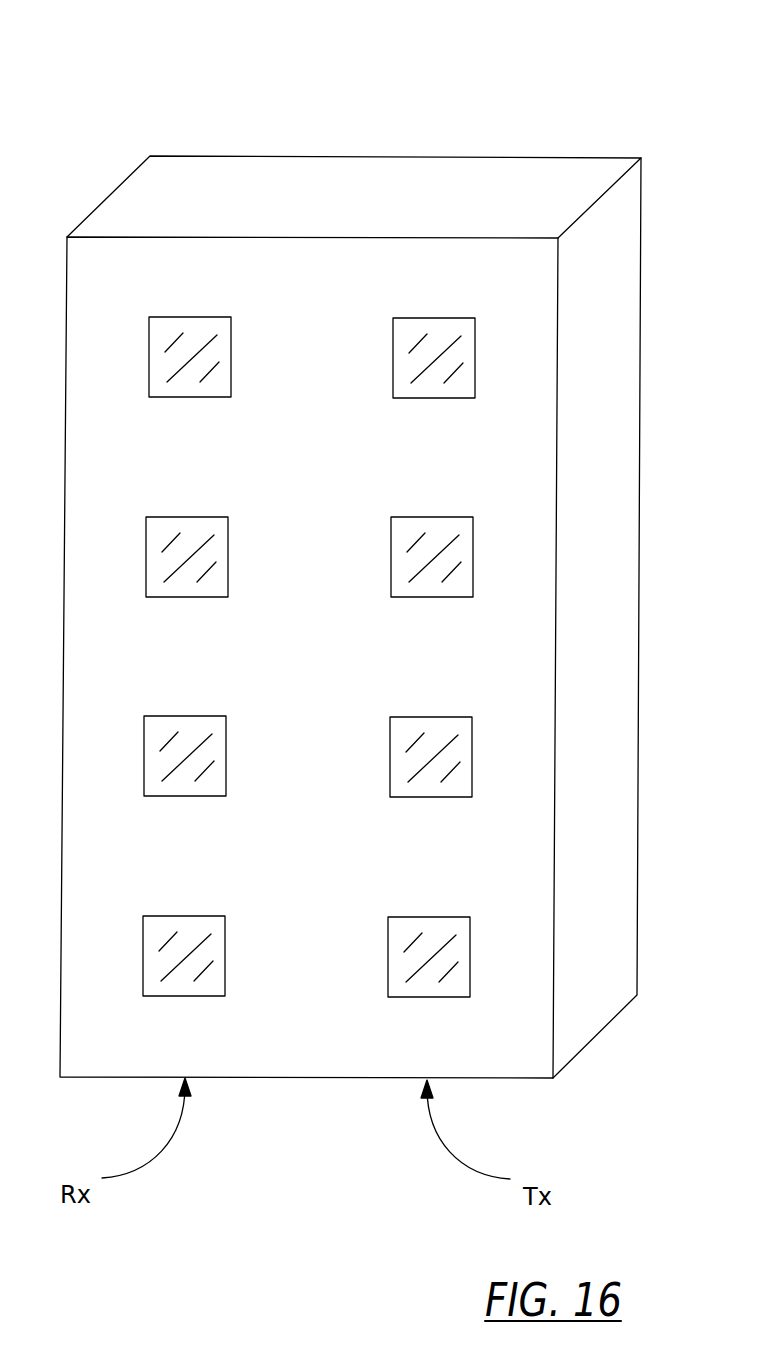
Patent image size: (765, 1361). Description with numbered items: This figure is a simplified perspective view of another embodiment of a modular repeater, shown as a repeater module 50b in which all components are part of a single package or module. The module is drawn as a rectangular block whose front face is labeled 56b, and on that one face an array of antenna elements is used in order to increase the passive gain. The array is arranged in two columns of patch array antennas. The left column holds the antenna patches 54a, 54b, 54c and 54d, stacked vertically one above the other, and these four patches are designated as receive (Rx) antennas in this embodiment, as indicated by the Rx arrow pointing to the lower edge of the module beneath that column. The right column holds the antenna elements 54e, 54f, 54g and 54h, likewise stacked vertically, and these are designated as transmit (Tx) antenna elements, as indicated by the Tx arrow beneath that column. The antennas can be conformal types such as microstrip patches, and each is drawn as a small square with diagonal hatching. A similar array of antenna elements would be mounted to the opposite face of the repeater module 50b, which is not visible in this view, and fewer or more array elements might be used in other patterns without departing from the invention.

The repeater module 50b is at (350, 541).
The housing / substrate 56b is at (498, 167).
The antenna patch 54a is at (201, 337).
The antenna patch 54b is at (198, 537).
The antenna patch 54c is at (196, 736).
The antenna patch 54d is at (195, 936).
The antenna element 54e is at (445, 338).
The antenna element 54f is at (443, 537).
The antenna element 54g is at (442, 737).
The antenna element 54h is at (440, 937).